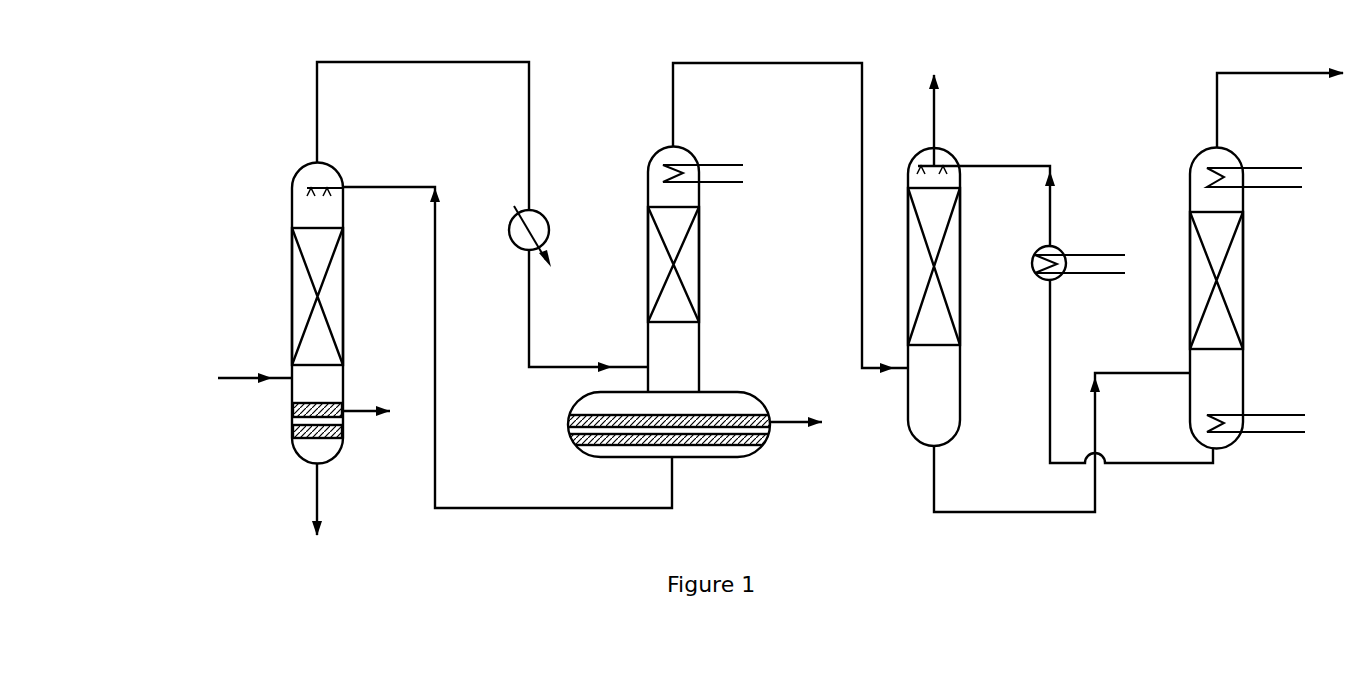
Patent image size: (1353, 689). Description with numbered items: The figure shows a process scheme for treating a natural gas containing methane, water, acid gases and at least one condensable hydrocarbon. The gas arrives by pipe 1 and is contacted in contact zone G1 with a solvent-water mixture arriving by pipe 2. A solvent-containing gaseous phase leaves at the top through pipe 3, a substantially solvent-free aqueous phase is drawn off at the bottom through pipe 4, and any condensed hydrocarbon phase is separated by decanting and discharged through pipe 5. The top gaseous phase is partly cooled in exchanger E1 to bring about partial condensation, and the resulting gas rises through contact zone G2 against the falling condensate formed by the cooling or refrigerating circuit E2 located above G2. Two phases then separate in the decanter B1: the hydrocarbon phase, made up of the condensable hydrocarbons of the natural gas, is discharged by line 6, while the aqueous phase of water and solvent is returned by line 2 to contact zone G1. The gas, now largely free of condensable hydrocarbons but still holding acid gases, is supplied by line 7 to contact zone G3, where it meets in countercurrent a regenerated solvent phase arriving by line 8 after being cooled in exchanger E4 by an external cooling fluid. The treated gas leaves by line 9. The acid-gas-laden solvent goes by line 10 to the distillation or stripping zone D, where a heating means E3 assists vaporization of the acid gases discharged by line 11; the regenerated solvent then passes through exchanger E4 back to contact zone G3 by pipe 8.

The pipe 1 is at (241, 376).
The pipe 2 is at (437, 296).
The pipe 3 is at (400, 68).
The pipe 4 is at (313, 503).
The pipe 5 is at (366, 396).
The line 6 is at (795, 421).
The line 7 is at (767, 69).
The line 8 is at (1052, 200).
The line 9 is at (936, 113).
The line 10 is at (1135, 373).
The line 11 is at (1293, 75).
The contact zone G1 is at (291, 308).
The contact zone G2 is at (699, 243).
The contact zone G3 is at (952, 268).
The exchanger E1 is at (546, 216).
The cooling or refrigerating circuit E2 is at (672, 160).
The heating means E3 is at (1220, 436).
The exchanger E4 is at (1056, 278).
The decanter B1 is at (762, 401).
The distillation or stripping zone D is at (1289, 350).